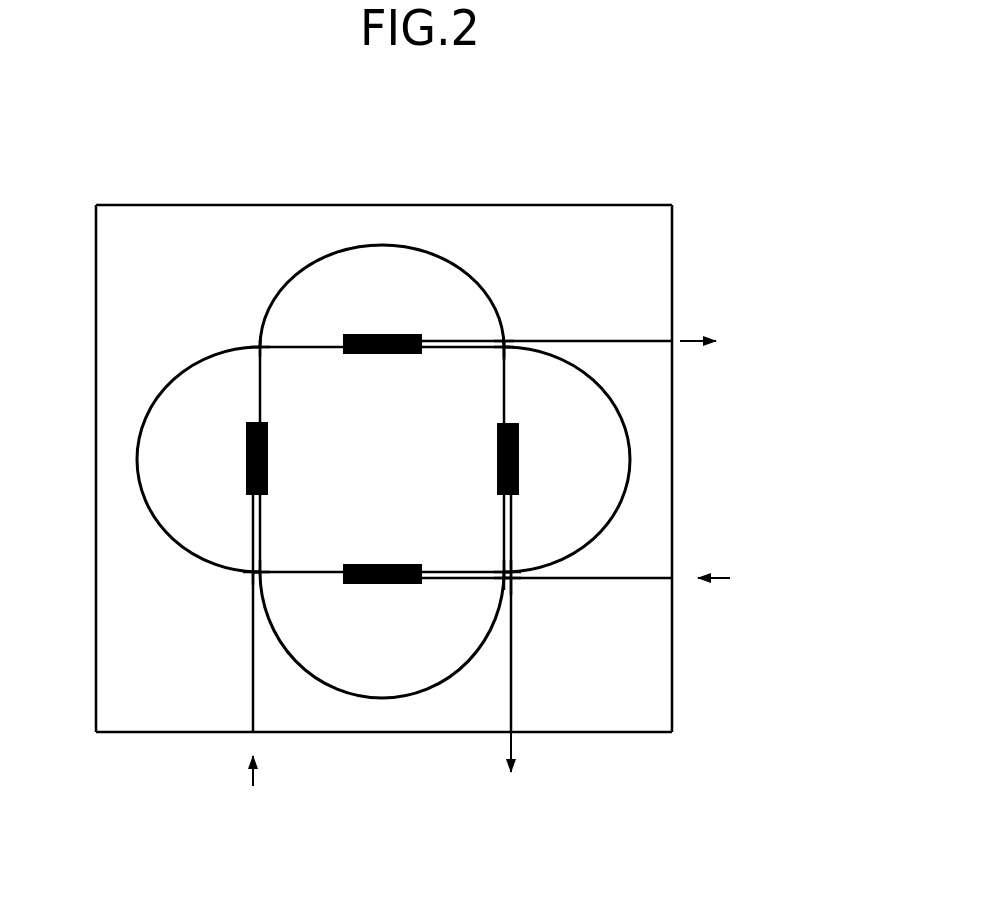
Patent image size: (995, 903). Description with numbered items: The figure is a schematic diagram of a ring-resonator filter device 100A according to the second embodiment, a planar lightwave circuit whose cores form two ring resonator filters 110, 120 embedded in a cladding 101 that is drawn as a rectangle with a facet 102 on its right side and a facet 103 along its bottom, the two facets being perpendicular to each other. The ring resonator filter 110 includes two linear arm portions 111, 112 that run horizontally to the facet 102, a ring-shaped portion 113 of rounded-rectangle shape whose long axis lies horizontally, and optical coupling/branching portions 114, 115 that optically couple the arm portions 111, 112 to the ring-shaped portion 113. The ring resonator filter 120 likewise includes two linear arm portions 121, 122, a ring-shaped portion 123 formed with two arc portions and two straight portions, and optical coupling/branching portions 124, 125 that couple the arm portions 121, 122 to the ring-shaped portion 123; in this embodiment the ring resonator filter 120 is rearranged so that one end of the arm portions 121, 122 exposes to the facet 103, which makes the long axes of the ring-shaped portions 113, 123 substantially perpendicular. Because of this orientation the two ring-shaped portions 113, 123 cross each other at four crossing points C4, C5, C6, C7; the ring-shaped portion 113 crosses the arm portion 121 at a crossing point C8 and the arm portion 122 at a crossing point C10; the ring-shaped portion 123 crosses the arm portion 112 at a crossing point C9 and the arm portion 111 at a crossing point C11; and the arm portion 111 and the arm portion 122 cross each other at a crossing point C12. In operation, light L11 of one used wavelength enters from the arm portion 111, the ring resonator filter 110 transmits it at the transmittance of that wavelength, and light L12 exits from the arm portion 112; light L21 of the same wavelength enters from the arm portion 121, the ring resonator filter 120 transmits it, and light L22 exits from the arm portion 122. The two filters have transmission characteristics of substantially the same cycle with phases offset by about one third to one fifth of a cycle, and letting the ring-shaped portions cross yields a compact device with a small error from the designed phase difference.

The ring-resonator filter device 100A is at (410, 450).
The cladding 101 is at (647, 733).
The facet 102 is at (672, 712).
The facet 103 is at (115, 733).
The ring resonator filter 110 is at (559, 318).
The arm portion 111 is at (608, 580).
The arm portion 112 is at (617, 339).
The ring-shaped portion 113 is at (178, 543).
The optical coupling/branching portion 114 is at (384, 563).
The optical coupling/branching portion 115 is at (384, 333).
The ring resonator filter 120 is at (372, 407).
The arm portion 121 is at (253, 708).
The arm portion 122 is at (512, 712).
The ring-shaped portion 123 is at (290, 283).
The optical coupling/branching portion 124 is at (246, 458).
The optical coupling/branching portion 125 is at (519, 462).
The crossing point C4 is at (265, 562).
The crossing point C5 is at (256, 338).
The crossing point C6 is at (498, 356).
The crossing point C7 is at (499, 562).
The crossing point C8 is at (248, 578).
The crossing point C9 is at (512, 334).
The crossing point C10 is at (518, 562).
The crossing point C11 is at (498, 584).
The crossing point C12 is at (520, 586).
The light L11 is at (712, 576).
The light L12 is at (713, 336).
The light L21 is at (250, 772).
The light L22 is at (508, 762).